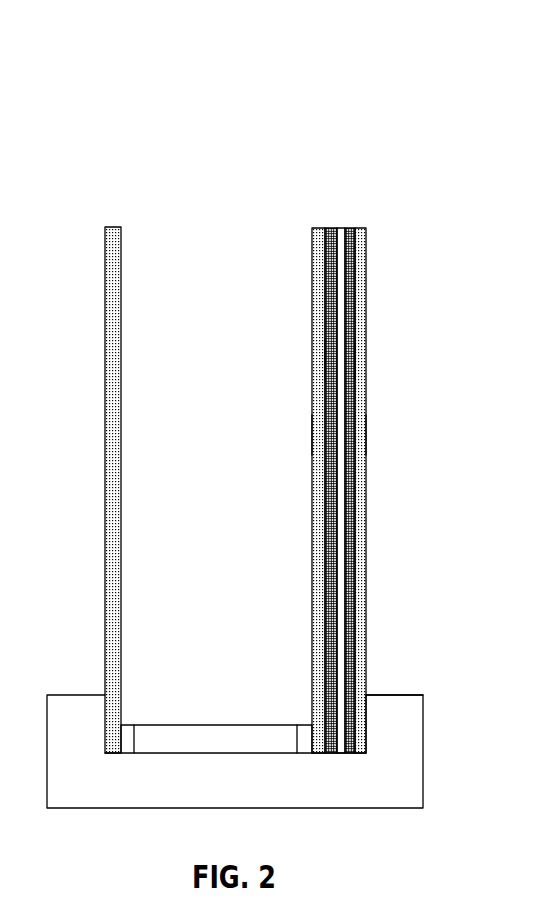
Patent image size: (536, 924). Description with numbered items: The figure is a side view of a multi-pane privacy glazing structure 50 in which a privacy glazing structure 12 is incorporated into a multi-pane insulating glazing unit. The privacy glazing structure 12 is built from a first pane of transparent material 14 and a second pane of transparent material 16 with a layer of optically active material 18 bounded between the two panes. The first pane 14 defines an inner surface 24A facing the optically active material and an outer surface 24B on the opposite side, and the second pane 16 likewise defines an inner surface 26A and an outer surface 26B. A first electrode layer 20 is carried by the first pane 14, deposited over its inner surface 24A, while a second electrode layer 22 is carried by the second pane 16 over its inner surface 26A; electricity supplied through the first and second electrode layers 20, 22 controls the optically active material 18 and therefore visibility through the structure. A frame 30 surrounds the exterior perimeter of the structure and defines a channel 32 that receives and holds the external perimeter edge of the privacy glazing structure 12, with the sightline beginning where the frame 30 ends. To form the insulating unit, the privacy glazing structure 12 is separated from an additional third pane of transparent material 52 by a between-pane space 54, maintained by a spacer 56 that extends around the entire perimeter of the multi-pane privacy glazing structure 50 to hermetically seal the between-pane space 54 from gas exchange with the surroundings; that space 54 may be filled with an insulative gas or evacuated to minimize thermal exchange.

The multi-pane privacy glazing structure 50 is at (170, 56).
The privacy glazing structure 12 is at (286, 438).
The first pane of transparent material 14 is at (318, 263).
The second pane of transparent material 16 is at (360, 263).
The layer of optically active material 18 is at (340, 236).
The first electrode layer 20 is at (330, 232).
The second electrode layer 22 is at (348, 230).
The inner surface 24A is at (328, 360).
The outer surface 24B is at (310, 434).
The inner surface 26A is at (352, 360).
The outer surface 26B is at (366, 434).
The frame 30 is at (63, 700).
The channel 32 is at (378, 690).
The third pane of transparent material 52 is at (113, 227).
The between-pane space 54 is at (313, 545).
The spacer 56 is at (205, 708).